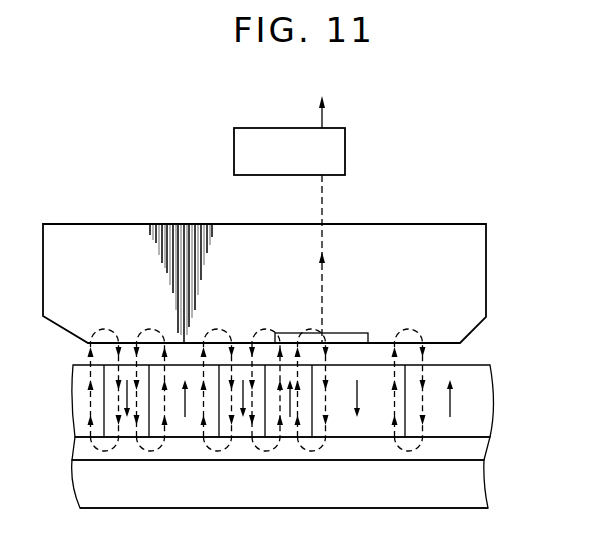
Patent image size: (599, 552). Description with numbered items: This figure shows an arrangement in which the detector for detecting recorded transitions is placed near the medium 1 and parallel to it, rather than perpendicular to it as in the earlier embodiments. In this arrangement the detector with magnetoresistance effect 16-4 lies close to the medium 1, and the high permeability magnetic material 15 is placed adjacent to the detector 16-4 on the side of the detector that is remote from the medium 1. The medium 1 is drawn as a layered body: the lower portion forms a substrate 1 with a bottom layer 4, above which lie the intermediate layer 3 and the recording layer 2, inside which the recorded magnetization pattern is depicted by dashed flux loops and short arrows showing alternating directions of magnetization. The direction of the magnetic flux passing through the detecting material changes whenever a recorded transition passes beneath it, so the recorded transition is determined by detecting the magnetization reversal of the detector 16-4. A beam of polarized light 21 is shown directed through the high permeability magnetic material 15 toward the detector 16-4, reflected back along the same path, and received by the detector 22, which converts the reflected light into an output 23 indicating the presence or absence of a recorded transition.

The medium 1 is at (487, 485).
The magnetic recording layer 2 is at (483, 400).
The intermediate layer 3 is at (478, 448).
The recording medium 4 is at (470, 496).
The high permeability magnetic material 15 is at (445, 245).
The detector with magnetoresistance effect 16-4 is at (353, 333).
The polarized light 21 is at (323, 208).
The detector 22 is at (346, 150).
The output 23 is at (320, 118).